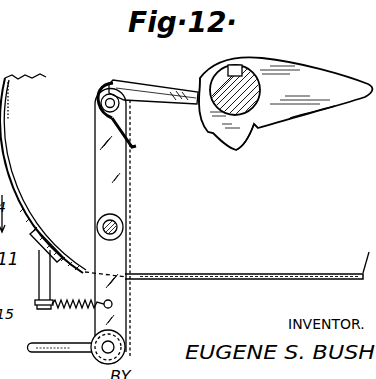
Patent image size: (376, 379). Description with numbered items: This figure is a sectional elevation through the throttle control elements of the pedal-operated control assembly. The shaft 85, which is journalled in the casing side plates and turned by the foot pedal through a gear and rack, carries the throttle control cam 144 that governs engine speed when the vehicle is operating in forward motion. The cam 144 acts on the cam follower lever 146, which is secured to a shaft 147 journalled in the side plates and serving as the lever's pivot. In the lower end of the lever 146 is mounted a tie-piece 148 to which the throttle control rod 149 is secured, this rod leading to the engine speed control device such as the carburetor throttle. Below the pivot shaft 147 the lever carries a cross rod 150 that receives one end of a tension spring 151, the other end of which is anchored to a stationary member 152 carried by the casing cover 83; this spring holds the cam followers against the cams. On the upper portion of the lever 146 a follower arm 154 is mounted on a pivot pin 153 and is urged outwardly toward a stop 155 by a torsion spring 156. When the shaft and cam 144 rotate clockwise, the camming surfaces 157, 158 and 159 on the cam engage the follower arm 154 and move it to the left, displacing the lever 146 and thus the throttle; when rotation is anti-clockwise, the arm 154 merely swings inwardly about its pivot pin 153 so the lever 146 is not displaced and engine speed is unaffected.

The cover 83 is at (292, 275).
The shaft 85 is at (222, 82).
The throttle control cam 144 is at (268, 78).
The cam follower lever 146 is at (100, 174).
The shaft 147 is at (123, 227).
The tie-piece 148 is at (115, 346).
The throttle control rod 149 is at (62, 352).
The cross rod 150 is at (113, 304).
The tension spring 151 is at (62, 305).
The stationary member 152 is at (45, 282).
The pivot pin 153 is at (101, 103).
The follower arm 154 is at (153, 90).
The stop 155 is at (113, 83).
The torsion spring 156 is at (134, 146).
The camming surface 157 is at (198, 120).
The camming surface 158 is at (240, 145).
The camming surface 159 is at (303, 117).